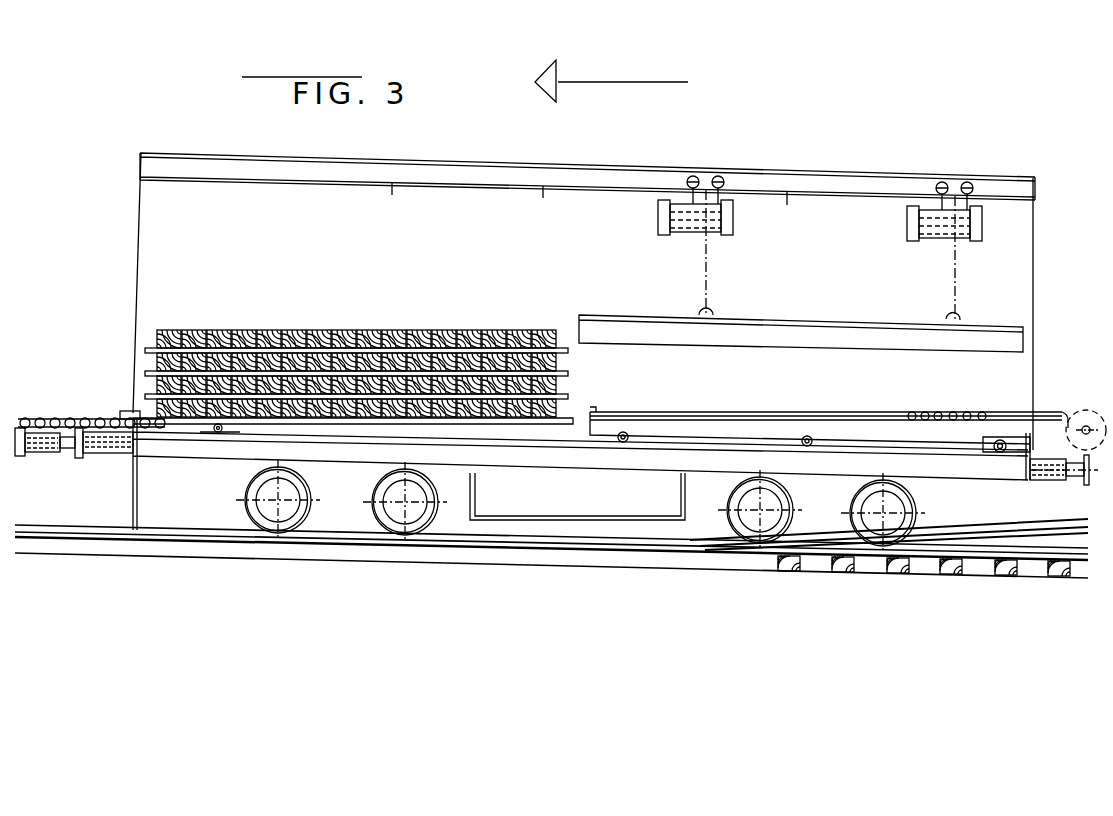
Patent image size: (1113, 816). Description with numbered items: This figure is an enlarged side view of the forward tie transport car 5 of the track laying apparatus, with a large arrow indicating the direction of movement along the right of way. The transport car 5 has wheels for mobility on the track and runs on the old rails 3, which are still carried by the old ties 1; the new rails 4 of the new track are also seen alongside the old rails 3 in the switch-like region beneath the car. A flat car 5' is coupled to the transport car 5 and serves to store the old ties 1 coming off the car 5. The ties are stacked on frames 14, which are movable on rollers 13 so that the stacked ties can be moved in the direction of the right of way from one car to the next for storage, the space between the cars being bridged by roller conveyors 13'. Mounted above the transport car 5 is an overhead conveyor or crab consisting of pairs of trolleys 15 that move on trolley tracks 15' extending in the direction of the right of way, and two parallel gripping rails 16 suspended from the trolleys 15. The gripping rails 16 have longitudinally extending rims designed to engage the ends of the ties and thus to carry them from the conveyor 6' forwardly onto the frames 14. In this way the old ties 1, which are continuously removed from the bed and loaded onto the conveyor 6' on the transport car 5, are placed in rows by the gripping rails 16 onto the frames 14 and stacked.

The old ties 1 is at (303, 337).
The old rails 3 is at (992, 557).
The new rails 4 is at (963, 540).
The forward tie and rail transport car 5 is at (615, 514).
The flat car 5' is at (74, 515).
The conveyor 6' is at (848, 407).
The rollers 13 is at (207, 462).
The roller conveyors 13' is at (84, 409).
The frames 14 is at (127, 413).
The trolleys 15 is at (818, 247).
The trolley tracks 15' is at (587, 164).
The gripping rails 16 is at (775, 335).